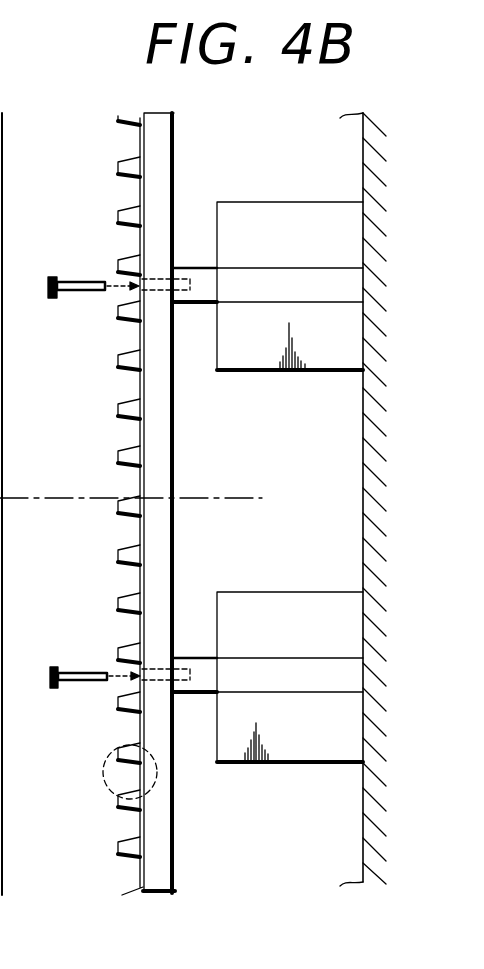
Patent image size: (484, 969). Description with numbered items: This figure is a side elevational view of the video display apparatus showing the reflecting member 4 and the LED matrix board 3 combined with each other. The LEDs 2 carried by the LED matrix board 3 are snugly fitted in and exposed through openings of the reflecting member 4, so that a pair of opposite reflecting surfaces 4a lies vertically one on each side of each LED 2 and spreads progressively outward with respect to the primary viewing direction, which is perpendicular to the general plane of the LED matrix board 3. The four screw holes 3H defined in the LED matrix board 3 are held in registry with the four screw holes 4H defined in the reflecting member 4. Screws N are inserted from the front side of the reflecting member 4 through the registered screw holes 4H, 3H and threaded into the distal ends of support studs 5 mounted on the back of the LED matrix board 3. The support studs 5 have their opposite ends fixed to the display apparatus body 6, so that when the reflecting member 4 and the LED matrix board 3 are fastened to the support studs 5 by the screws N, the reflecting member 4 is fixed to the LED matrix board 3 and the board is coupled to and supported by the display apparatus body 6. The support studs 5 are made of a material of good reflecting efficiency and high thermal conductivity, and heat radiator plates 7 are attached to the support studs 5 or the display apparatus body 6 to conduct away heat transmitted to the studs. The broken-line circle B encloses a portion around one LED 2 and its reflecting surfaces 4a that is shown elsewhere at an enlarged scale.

The LED 2 is at (140, 142).
The LED matrix board 3 is at (157, 112).
The screw hole 3H is at (162, 275).
The reflecting member 4 is at (127, 125).
The reflecting surface 4a is at (127, 835).
The screw hole 4H is at (152, 275).
The support stud 5 is at (196, 305).
The display apparatus body 6 is at (380, 236).
The heat radiator plate 7 is at (310, 372).
The screw N is at (83, 277).
The encircled portion B is at (110, 757).